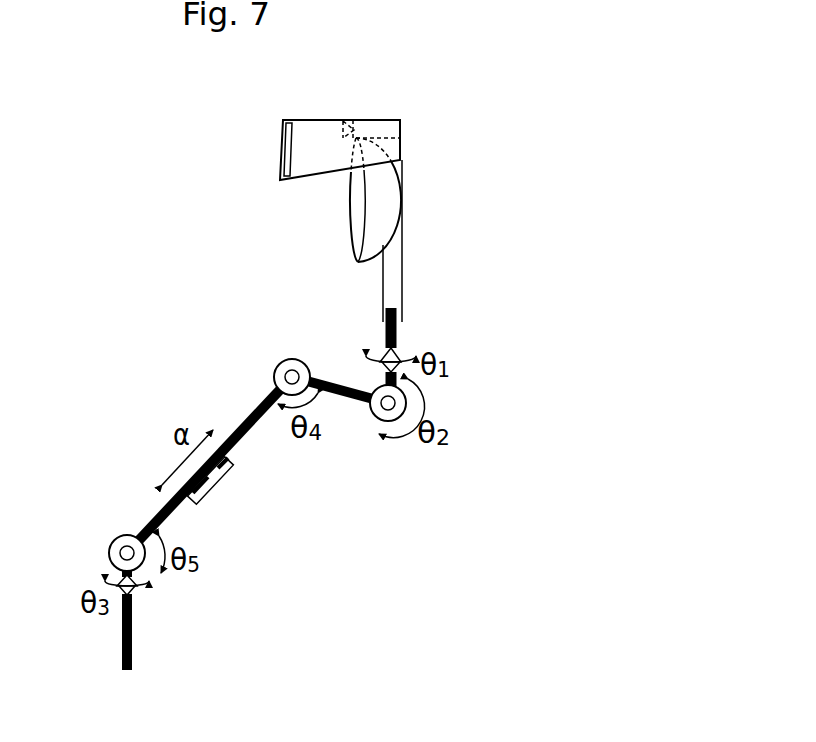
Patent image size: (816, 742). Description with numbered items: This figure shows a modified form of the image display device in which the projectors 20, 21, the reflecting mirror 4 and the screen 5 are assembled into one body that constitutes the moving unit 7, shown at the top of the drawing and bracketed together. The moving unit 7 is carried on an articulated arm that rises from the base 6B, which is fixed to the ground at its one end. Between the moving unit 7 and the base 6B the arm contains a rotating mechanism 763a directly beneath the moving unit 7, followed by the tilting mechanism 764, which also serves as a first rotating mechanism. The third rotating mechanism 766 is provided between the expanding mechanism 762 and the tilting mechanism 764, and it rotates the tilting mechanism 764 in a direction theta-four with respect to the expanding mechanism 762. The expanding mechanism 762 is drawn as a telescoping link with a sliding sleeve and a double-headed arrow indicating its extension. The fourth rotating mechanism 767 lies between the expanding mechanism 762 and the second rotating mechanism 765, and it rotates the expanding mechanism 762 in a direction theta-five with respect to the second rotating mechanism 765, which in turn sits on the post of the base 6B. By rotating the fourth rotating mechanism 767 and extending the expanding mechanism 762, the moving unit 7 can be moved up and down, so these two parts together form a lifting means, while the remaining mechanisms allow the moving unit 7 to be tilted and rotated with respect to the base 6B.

The reflecting mirror 4 is at (283, 137).
The screen 5 is at (395, 187).
The moving unit 7 is at (487, 52).
The projector 20 is at (383, 120).
The projector 21 is at (348, 129).
The base 6B is at (122, 643).
The expanding mechanism 762 is at (188, 475).
The rotary joint 763a is at (395, 352).
The tilting mechanism 764 is at (375, 417).
The second rotating mechanism 765 is at (118, 578).
The third rotating mechanism 766 is at (278, 360).
The fourth rotating mechanism 767 is at (118, 537).